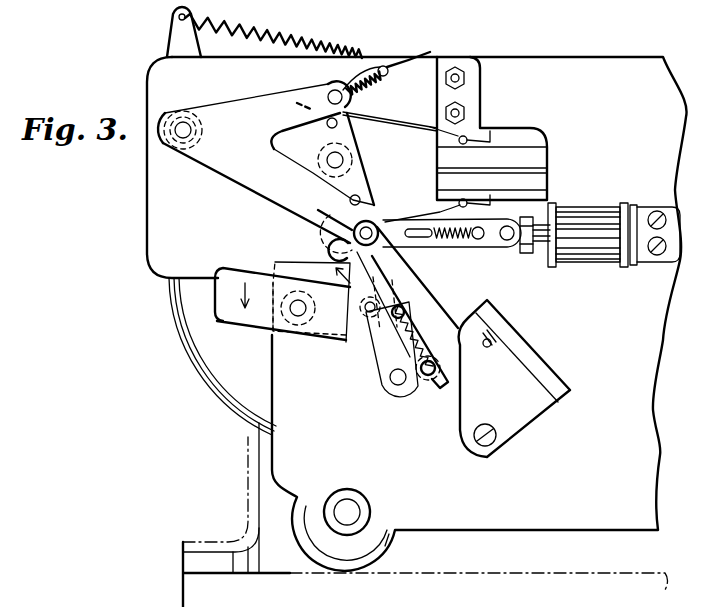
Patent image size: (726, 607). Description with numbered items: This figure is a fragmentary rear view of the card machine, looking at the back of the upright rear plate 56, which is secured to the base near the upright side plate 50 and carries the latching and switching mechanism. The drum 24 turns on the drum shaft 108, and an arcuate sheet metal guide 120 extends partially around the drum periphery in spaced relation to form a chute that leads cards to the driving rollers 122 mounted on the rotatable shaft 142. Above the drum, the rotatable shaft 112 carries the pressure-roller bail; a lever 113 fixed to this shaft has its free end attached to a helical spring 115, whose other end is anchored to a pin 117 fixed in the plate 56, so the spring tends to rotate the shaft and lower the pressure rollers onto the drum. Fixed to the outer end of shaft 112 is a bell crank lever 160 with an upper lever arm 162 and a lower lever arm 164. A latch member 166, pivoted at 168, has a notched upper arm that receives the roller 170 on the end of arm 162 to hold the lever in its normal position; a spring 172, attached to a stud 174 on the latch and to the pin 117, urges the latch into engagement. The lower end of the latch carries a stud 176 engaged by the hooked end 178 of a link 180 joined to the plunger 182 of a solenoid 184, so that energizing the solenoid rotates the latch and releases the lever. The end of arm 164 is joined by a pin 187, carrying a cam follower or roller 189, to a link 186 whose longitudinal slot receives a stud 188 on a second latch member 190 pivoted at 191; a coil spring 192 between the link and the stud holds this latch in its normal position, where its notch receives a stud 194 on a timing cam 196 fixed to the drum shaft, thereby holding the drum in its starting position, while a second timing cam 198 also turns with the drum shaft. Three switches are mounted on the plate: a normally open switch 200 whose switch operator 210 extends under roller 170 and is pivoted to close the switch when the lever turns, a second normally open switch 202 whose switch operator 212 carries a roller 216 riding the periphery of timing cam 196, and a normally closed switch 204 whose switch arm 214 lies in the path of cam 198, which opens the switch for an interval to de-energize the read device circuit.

The drum 24 is at (218, 383).
The upright side plate 50 is at (246, 485).
The plate 56 is at (147, 220).
The drum shaft 108 is at (300, 318).
The shaft 112 is at (183, 130).
The lever 113 is at (168, 35).
The helical spring 115 is at (282, 33).
The pin 117 is at (390, 68).
The arcuate sheet metal guide 120 is at (172, 338).
The driving rollers 122 is at (392, 545).
The rotatable shaft 142 is at (360, 505).
The lever 160 is at (180, 155).
The upper lever arm 162 is at (277, 93).
The lower lever arm 164 is at (255, 195).
The latch member 166 is at (355, 165).
The pivot 168 is at (343, 158).
The roller 170 is at (356, 72).
The spring 172 is at (389, 77).
The stud 174 is at (322, 126).
The stud 176 is at (375, 186).
The hooked end 178 is at (318, 226).
The link 180 is at (484, 247).
The plunger 182 is at (537, 250).
The solenoid 184 is at (600, 262).
The link 186 is at (388, 262).
The pin 187 is at (318, 212).
The stud 188 is at (428, 380).
The cam follower or roller 189 is at (361, 202).
The latch member 190 is at (383, 366).
The pivot 191 is at (397, 382).
The coil spring 192 is at (408, 312).
The stud 194 is at (373, 318).
The timing cam 196 is at (268, 266).
The second timing cam 198 is at (259, 320).
The normally open switch 200 is at (552, 158).
The second normally open switch 202 is at (552, 185).
The normally closed switch 204 is at (565, 391).
The switch operator 210 is at (432, 126).
The switch operator 212 is at (450, 203).
The switch arm 214 is at (485, 308).
The roller 216 is at (352, 244).